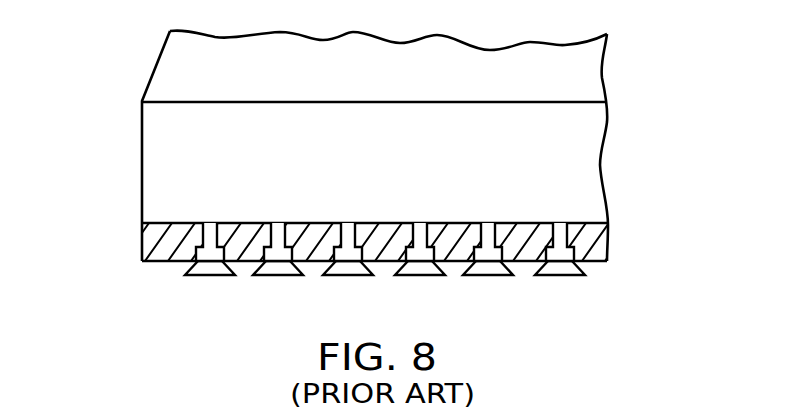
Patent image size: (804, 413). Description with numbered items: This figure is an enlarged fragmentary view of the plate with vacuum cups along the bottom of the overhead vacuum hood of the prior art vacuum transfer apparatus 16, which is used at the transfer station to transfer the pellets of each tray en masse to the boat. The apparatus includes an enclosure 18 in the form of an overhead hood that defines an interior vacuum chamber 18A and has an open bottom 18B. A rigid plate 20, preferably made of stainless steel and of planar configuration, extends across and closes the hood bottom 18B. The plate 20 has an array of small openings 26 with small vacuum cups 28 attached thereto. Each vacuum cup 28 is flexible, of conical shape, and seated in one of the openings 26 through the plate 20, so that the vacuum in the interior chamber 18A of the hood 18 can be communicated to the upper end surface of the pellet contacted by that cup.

The vacuum transfer apparatus 16 is at (141, 111).
The enclosure 18 is at (157, 63).
The interior vacuum chamber 18A is at (573, 70).
The open bottom 18B is at (450, 218).
The rigid plate 20 is at (612, 241).
The openings 26 is at (272, 224).
The vacuum cups 28 is at (350, 276).